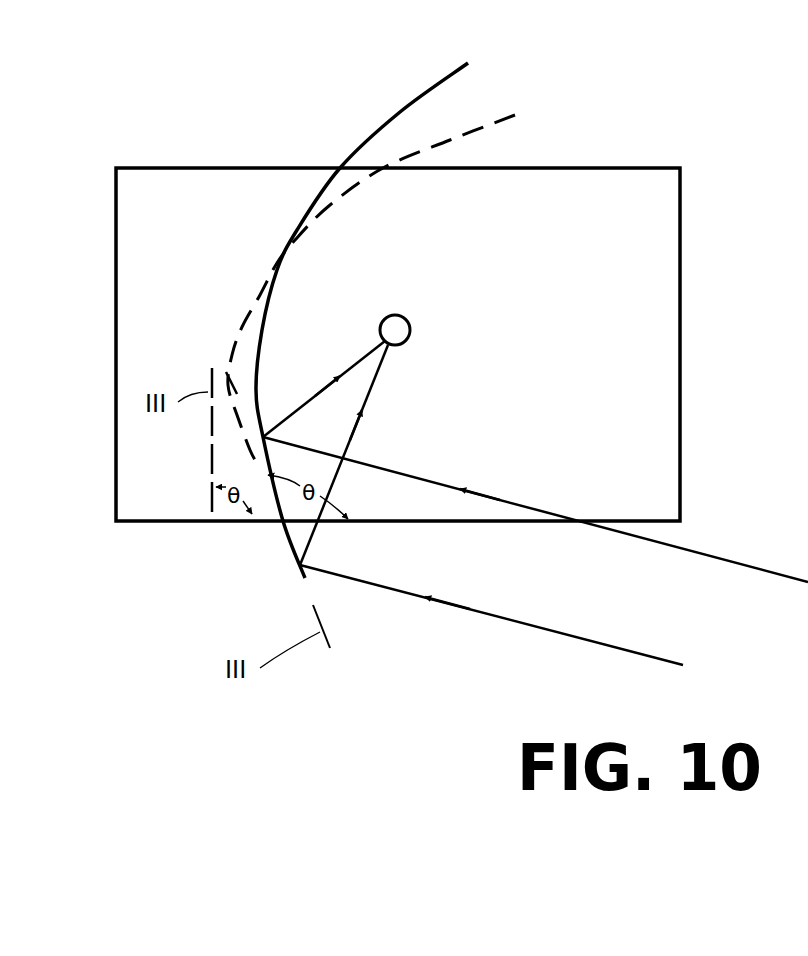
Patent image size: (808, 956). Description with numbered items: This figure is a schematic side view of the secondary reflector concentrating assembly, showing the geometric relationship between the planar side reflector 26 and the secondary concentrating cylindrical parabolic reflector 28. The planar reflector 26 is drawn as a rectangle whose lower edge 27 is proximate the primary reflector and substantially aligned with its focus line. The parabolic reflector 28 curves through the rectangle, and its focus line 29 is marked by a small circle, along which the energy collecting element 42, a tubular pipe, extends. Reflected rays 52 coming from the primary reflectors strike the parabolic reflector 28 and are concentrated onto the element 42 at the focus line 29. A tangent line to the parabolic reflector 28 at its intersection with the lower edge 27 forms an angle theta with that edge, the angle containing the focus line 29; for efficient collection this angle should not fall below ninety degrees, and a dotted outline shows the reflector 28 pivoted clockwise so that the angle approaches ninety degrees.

The planar reflector 26 is at (582, 168).
The lower edge 27 is at (186, 524).
The secondary concentrating cylindrical parabolic reflector 28 is at (445, 78).
The focus line 29 is at (397, 328).
The energy collecting element 42 is at (411, 322).
The reflected rays 52 is at (675, 550).